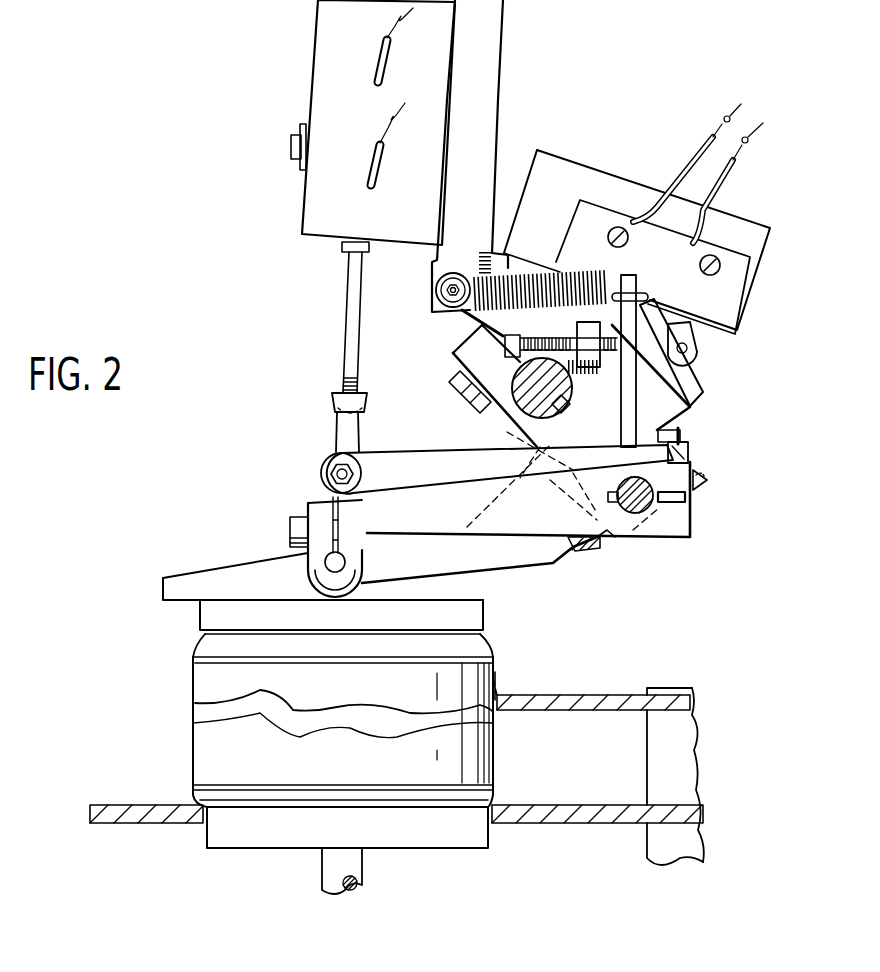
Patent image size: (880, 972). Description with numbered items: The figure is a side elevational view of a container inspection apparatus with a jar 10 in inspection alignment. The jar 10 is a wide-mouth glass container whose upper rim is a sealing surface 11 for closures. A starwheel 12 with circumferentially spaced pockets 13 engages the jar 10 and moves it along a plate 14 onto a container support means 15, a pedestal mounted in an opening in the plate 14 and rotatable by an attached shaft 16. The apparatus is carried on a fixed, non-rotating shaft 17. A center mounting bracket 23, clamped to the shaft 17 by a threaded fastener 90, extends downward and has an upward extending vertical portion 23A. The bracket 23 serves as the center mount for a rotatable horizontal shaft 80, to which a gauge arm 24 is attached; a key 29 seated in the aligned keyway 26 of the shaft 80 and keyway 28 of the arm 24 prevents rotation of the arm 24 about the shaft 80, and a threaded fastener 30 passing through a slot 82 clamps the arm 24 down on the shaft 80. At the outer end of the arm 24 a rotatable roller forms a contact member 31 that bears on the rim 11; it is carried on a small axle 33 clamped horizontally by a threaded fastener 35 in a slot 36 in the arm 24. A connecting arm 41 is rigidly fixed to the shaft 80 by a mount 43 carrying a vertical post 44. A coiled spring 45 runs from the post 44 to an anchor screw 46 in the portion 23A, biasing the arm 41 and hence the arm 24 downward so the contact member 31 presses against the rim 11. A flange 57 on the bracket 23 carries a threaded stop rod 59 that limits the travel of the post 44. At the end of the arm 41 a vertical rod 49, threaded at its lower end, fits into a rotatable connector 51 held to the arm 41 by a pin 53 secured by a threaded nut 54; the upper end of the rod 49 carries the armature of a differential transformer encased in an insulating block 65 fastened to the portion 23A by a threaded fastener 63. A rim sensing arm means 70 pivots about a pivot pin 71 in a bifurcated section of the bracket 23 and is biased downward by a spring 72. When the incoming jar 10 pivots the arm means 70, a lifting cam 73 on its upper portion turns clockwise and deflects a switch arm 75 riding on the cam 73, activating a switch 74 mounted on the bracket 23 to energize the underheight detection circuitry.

The jar 10 is at (354, 701).
The sealing surface 11 is at (478, 595).
The starwheel 12 is at (607, 693).
The pockets 13 is at (497, 680).
The plate 14 is at (700, 812).
The container support means 15 is at (347, 839).
The shaft 16 is at (323, 887).
The fixed shaft 17 is at (515, 424).
The center mounting bracket 23 is at (496, 362).
The vertical portion 23A is at (497, 111).
The gauge arm 24 is at (455, 517).
The keyway 26 is at (637, 513).
The keyway 28 is at (607, 533).
The key 29 is at (613, 503).
The threaded fastener 30 is at (688, 450).
The contact member 31 is at (298, 570).
The axle 33 is at (338, 563).
The threaded fastener 35 is at (290, 520).
The slot 36 is at (325, 496).
The connecting arm 41 is at (425, 486).
The mount 43 is at (660, 437).
The vertical post 44 is at (628, 288).
The coiled spring 45 is at (467, 316).
The anchor screw 46 is at (438, 297).
The vertical rod 49 is at (350, 342).
The rotatable connector 51 is at (337, 428).
The pin 53 is at (333, 457).
The threaded nut 54 is at (330, 470).
The flange 57 is at (592, 325).
The threaded stop rod 59 is at (520, 300).
The threaded fastener 63 is at (290, 158).
The insulating block 65 is at (341, 65).
The arm means 70 is at (437, 571).
The pivot pin 71 is at (562, 497).
The spring 72 is at (573, 550).
The lifting cam 73 is at (677, 384).
The switch 74 is at (733, 297).
The switch arm 75 is at (693, 340).
The rotatable horizontal shaft 80 is at (705, 472).
The slot 82 is at (693, 500).
The threaded fastener 90 is at (452, 374).